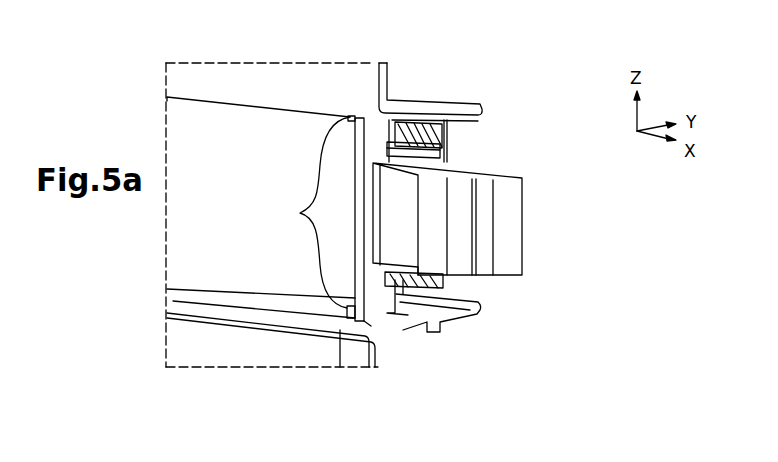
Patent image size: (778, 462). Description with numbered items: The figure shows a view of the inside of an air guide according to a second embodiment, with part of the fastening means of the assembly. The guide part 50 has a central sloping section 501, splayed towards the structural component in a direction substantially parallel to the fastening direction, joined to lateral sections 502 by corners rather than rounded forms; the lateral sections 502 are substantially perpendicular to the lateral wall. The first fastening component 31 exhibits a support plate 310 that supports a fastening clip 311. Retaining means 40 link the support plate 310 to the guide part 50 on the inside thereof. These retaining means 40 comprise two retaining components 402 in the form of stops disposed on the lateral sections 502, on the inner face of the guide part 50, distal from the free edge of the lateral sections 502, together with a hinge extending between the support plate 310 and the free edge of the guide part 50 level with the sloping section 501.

The guide part 50 is at (194, 117).
The central sloping section 501 is at (250, 130).
The retaining means 40 is at (318, 312).
The first fastening component 31 is at (538, 240).
The retaining component 402 is at (297, 212).
The support plate 310 is at (372, 130).
The lateral section 502 is at (437, 103).
The fastening clip 311 is at (502, 187).